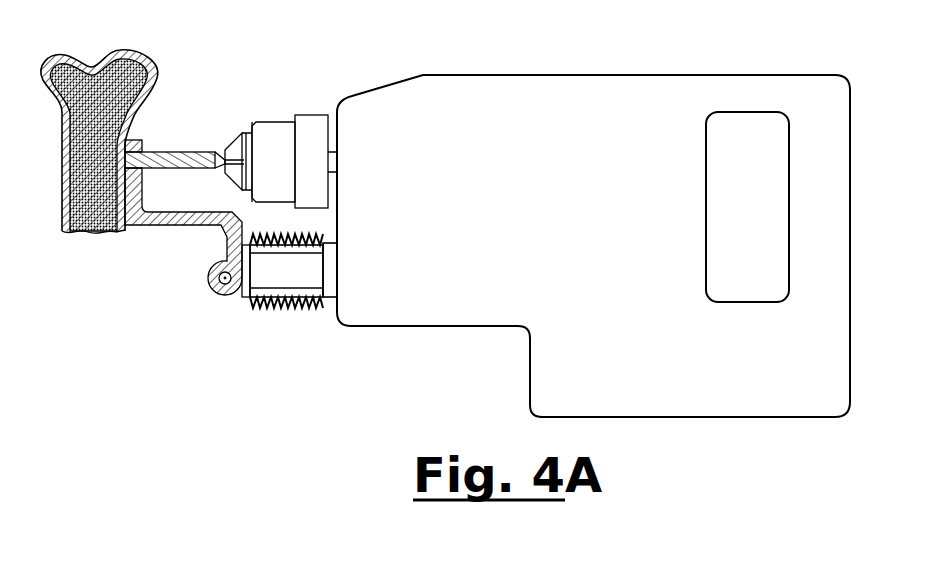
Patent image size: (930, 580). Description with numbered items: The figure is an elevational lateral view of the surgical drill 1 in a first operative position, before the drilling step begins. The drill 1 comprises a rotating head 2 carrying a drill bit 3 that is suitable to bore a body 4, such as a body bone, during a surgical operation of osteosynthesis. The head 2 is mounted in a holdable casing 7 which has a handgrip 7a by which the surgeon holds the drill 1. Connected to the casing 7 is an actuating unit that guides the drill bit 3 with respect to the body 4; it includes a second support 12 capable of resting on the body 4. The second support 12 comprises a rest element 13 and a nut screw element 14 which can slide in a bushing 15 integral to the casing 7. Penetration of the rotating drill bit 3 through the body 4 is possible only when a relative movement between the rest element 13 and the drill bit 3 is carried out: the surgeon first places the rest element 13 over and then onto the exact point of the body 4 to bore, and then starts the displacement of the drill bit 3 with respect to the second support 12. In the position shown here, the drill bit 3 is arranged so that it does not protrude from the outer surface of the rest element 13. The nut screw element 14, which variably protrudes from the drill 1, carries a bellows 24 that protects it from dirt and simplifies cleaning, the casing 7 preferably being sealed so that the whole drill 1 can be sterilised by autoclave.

The surgical drill 1 is at (775, 436).
The rotating head 2 is at (260, 127).
The drill bit 3 is at (145, 157).
The body 4 is at (153, 90).
The casing 7 is at (593, 212).
The handgrip 7a is at (710, 254).
The second support 12 is at (235, 314).
The rest element 13 is at (167, 226).
The nut screw element 14 is at (305, 273).
The bushing 15 is at (328, 275).
The bellows 24 is at (263, 310).